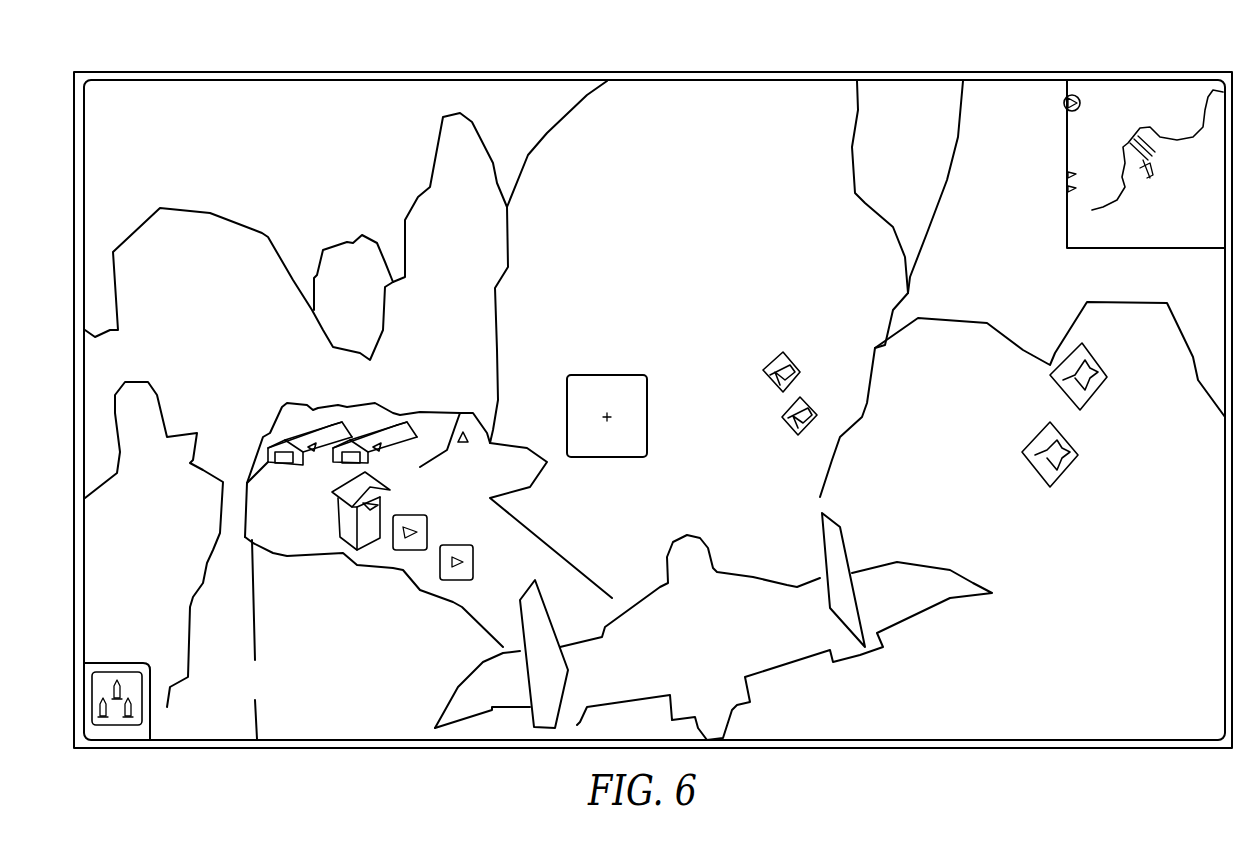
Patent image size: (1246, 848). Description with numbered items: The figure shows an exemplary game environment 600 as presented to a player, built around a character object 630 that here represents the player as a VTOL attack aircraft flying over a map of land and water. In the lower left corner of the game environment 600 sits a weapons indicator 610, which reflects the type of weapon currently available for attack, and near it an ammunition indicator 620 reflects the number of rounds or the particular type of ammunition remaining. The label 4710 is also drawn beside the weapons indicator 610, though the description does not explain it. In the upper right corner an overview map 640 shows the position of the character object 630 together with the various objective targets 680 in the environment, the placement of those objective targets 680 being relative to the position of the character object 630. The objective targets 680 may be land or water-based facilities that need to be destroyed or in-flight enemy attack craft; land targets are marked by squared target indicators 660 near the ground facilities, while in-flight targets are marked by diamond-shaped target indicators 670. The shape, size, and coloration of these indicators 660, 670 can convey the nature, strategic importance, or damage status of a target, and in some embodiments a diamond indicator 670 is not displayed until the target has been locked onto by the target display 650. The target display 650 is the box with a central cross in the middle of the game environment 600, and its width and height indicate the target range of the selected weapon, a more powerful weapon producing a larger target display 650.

The game environment 600 is at (148, 57).
The weapons indicator 610 is at (145, 668).
The ammunition indicator 620 is at (195, 707).
The character object 630 is at (747, 627).
The overview map 640 is at (1142, 105).
The target display 650 is at (598, 375).
The land-target indicator 660 is at (441, 568).
The in-flight target indicator 670 is at (815, 408).
The objective target 680 is at (1072, 111).
The weapons status indicator frame 4710 is at (149, 705).